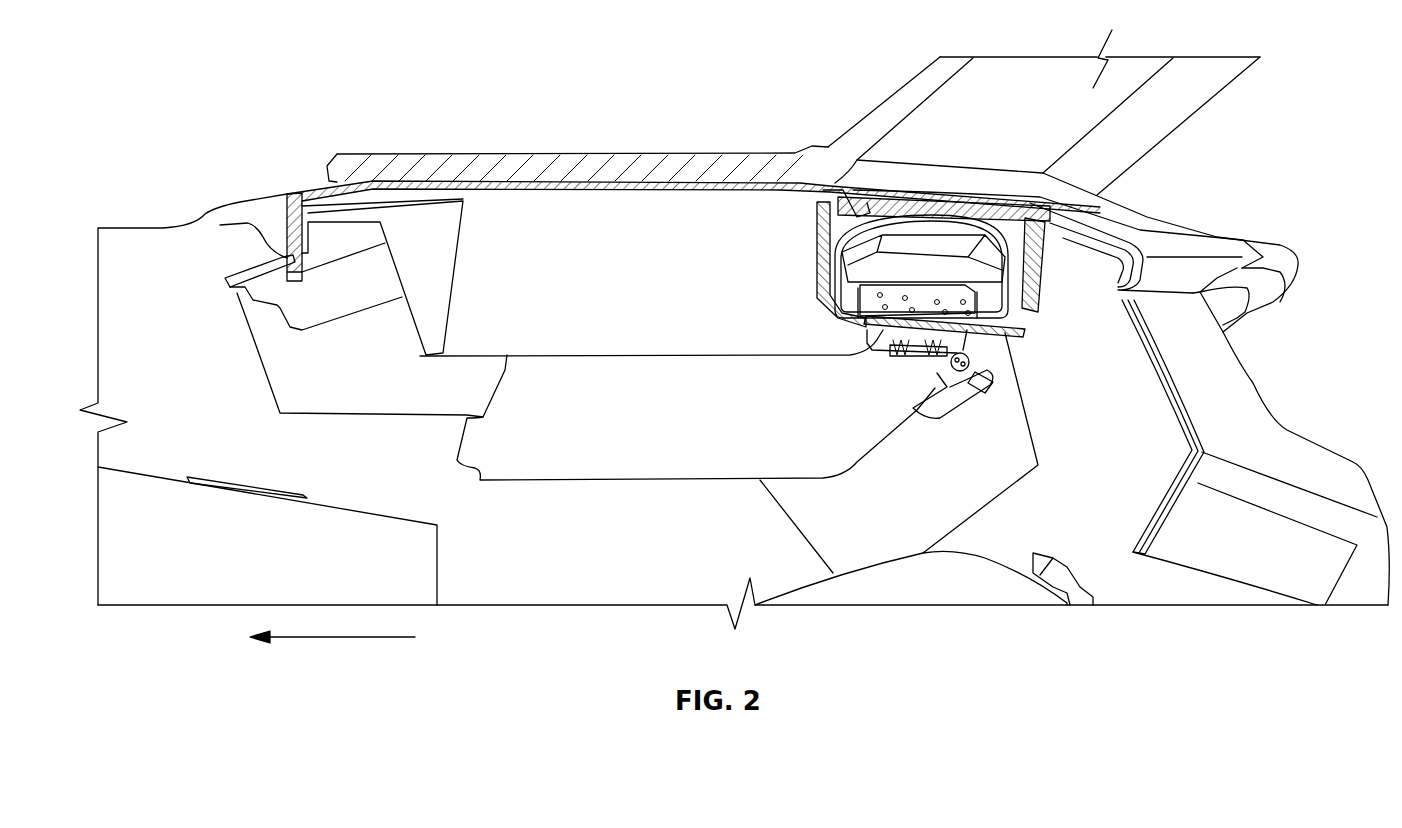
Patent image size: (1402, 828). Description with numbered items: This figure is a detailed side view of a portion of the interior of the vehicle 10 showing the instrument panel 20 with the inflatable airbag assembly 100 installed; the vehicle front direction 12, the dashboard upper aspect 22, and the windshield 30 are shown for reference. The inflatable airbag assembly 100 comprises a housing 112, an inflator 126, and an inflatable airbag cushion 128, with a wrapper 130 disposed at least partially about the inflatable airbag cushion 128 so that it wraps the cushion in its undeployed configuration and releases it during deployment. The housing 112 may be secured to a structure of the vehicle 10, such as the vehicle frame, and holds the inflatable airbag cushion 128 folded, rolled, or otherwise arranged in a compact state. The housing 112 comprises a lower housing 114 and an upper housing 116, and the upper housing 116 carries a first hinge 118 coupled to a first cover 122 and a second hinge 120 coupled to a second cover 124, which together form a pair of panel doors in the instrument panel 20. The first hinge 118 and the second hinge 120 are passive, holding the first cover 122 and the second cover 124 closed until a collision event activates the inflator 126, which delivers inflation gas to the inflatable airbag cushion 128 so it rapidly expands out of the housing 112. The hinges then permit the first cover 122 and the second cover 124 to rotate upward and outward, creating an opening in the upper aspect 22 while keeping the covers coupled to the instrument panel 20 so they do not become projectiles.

The vehicle 10 is at (474, 108).
The vehicle front direction 12 is at (356, 638).
The instrument panel 20 is at (1285, 186).
The dashboard upper aspect 22 is at (1215, 222).
The windshield 30 is at (920, 70).
The inflatable airbag assembly 100 is at (926, 238).
The housing 112 is at (1052, 305).
The lower housing 114 is at (1030, 333).
The upper housing 116 is at (1047, 275).
The first hinge 118 is at (885, 189).
The second hinge 120 is at (1024, 207).
The first cover 122 is at (928, 200).
The second cover 124 is at (968, 200).
The inflator 126 is at (866, 347).
The inflatable airbag cushion 128 is at (832, 228).
The wrapper 130 is at (822, 252).